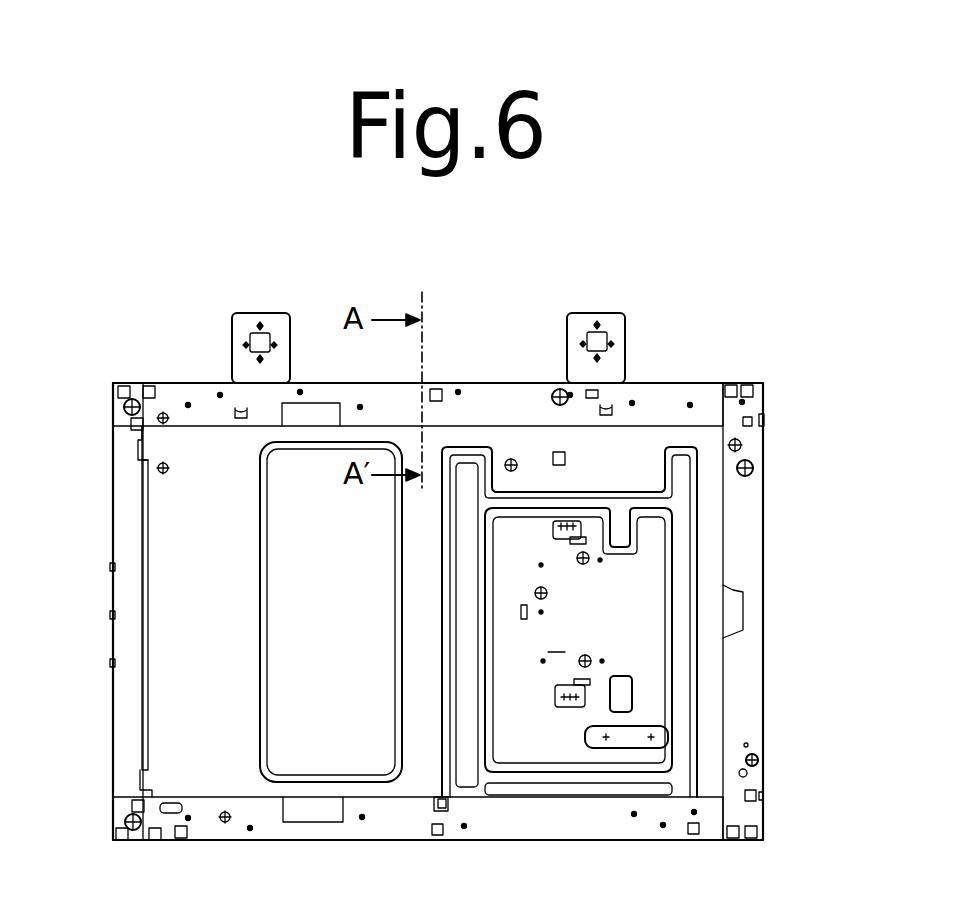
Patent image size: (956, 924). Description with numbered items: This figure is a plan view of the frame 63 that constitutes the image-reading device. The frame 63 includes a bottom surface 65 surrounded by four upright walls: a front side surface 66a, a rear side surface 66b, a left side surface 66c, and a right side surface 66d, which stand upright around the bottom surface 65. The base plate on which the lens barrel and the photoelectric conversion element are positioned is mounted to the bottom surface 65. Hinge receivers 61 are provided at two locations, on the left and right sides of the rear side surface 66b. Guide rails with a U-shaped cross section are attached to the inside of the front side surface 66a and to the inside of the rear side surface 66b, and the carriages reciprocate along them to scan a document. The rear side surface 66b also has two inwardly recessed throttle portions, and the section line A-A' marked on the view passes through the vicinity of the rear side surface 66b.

The hinge receiver 61 is at (232, 340).
The frame 63 is at (704, 352).
The bottom surface 65 is at (648, 677).
The front side surface 66a is at (406, 842).
The rear side surface 66b is at (186, 385).
The left side surface 66c is at (112, 532).
The right side surface 66d is at (765, 590).